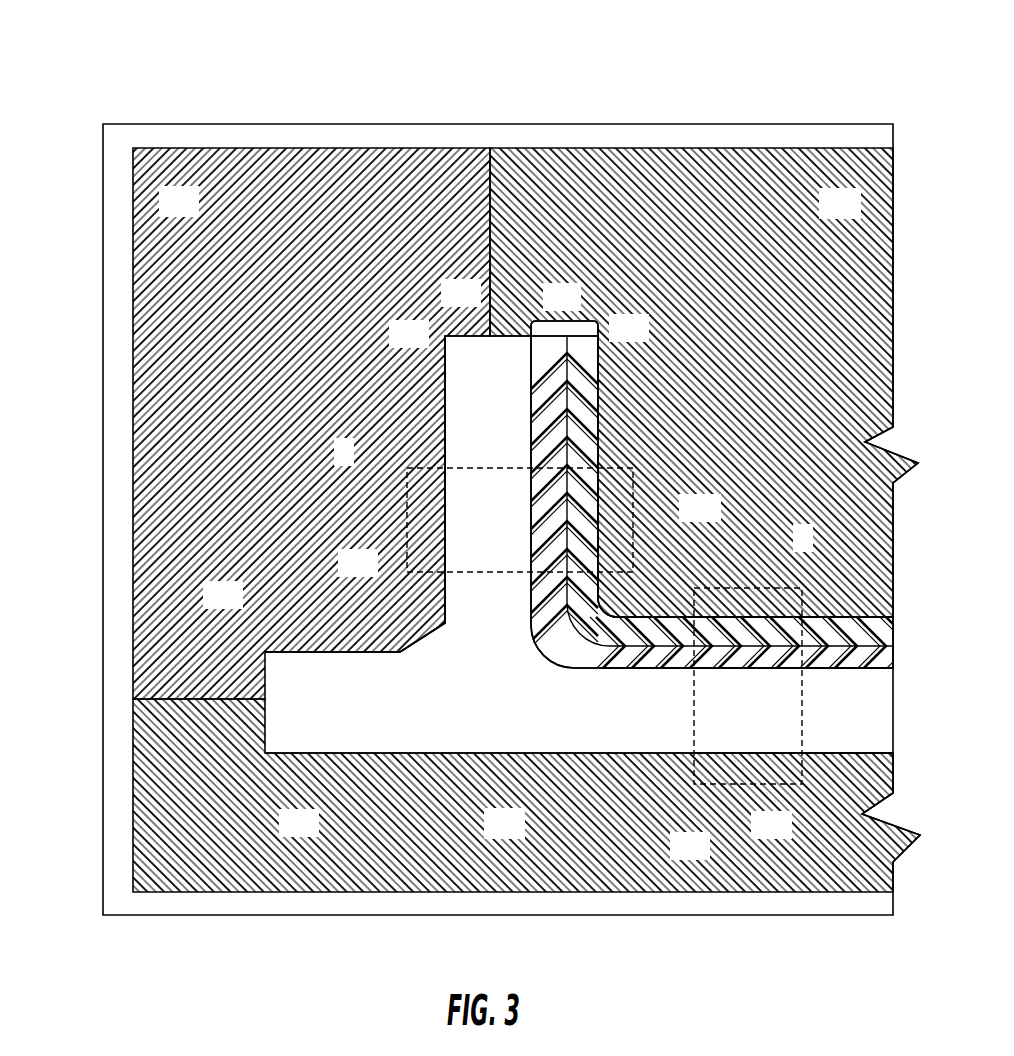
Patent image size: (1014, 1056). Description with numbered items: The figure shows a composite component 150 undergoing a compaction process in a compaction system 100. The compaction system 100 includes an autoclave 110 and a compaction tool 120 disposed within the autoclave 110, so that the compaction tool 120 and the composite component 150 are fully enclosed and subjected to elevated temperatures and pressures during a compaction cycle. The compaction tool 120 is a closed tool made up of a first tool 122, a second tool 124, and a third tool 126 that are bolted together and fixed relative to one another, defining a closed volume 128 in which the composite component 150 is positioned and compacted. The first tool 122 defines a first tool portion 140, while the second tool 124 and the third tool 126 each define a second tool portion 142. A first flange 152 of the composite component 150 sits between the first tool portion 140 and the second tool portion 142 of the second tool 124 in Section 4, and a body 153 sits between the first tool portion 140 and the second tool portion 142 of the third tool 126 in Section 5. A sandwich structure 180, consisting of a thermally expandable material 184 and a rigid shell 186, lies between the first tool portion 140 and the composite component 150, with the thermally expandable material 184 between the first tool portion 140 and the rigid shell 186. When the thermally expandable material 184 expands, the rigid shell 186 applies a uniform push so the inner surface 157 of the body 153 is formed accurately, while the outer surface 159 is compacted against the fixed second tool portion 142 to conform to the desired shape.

The compaction system 100 is at (234, 110).
The autoclave 110 is at (103, 672).
The compaction tool 120 is at (526, 478).
The first tool 122 is at (857, 217).
The second tool 124 is at (196, 214).
The third tool 126 is at (521, 837).
The closed volume 128 is at (297, 645).
The first tool portion 140 is at (742, 598).
The second tool portion 142 is at (430, 538).
The composite component 150 is at (337, 759).
The first flange 152 is at (458, 397).
The body 153 is at (878, 715).
The inner surface 157 is at (860, 658).
The outer surface 159 is at (822, 757).
The sandwich structure 180 is at (699, 472).
The thermally expandable material 184 is at (582, 373).
The rigid shell 186 is at (543, 368).
The Section 4 is at (391, 502).
The Section 5 is at (746, 588).